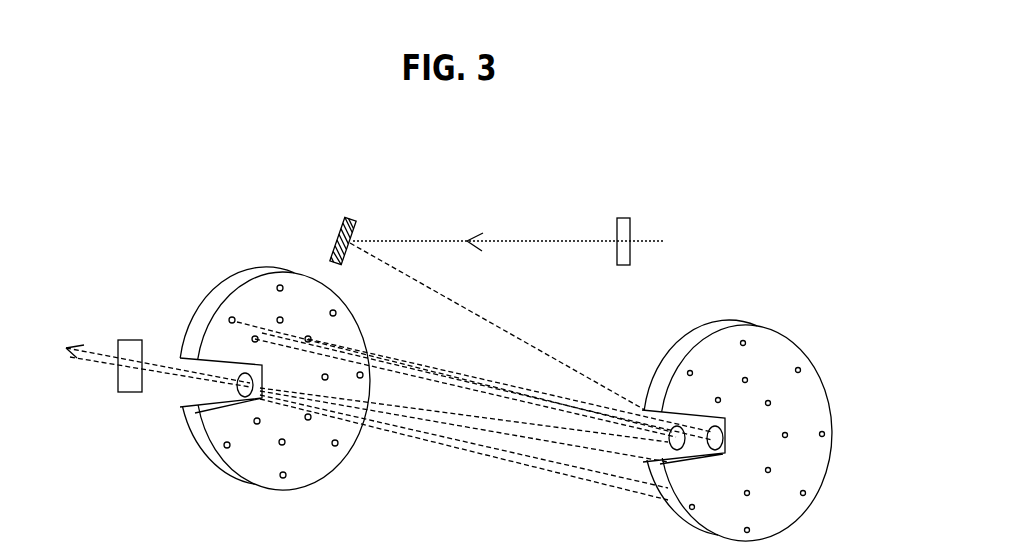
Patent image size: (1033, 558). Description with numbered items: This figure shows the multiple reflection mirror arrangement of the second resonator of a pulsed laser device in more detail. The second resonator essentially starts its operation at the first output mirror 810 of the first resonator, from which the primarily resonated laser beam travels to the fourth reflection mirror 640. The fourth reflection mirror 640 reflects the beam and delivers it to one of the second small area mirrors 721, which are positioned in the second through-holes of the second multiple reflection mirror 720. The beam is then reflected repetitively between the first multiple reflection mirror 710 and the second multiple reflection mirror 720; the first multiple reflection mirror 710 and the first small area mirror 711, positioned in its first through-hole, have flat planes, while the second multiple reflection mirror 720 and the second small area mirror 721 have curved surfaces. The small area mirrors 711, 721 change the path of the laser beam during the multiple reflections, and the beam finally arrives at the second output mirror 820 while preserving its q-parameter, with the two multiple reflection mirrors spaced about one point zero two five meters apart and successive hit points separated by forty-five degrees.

The fourth reflection mirror 640 is at (345, 216).
The first output mirror 810 is at (623, 216).
The second output mirror 820 is at (128, 338).
The first multiple reflection mirror 710 is at (262, 265).
The first small area mirror 711 is at (240, 375).
The second multiple reflection mirror 720 is at (742, 322).
The second small area mirror 721 is at (711, 428).